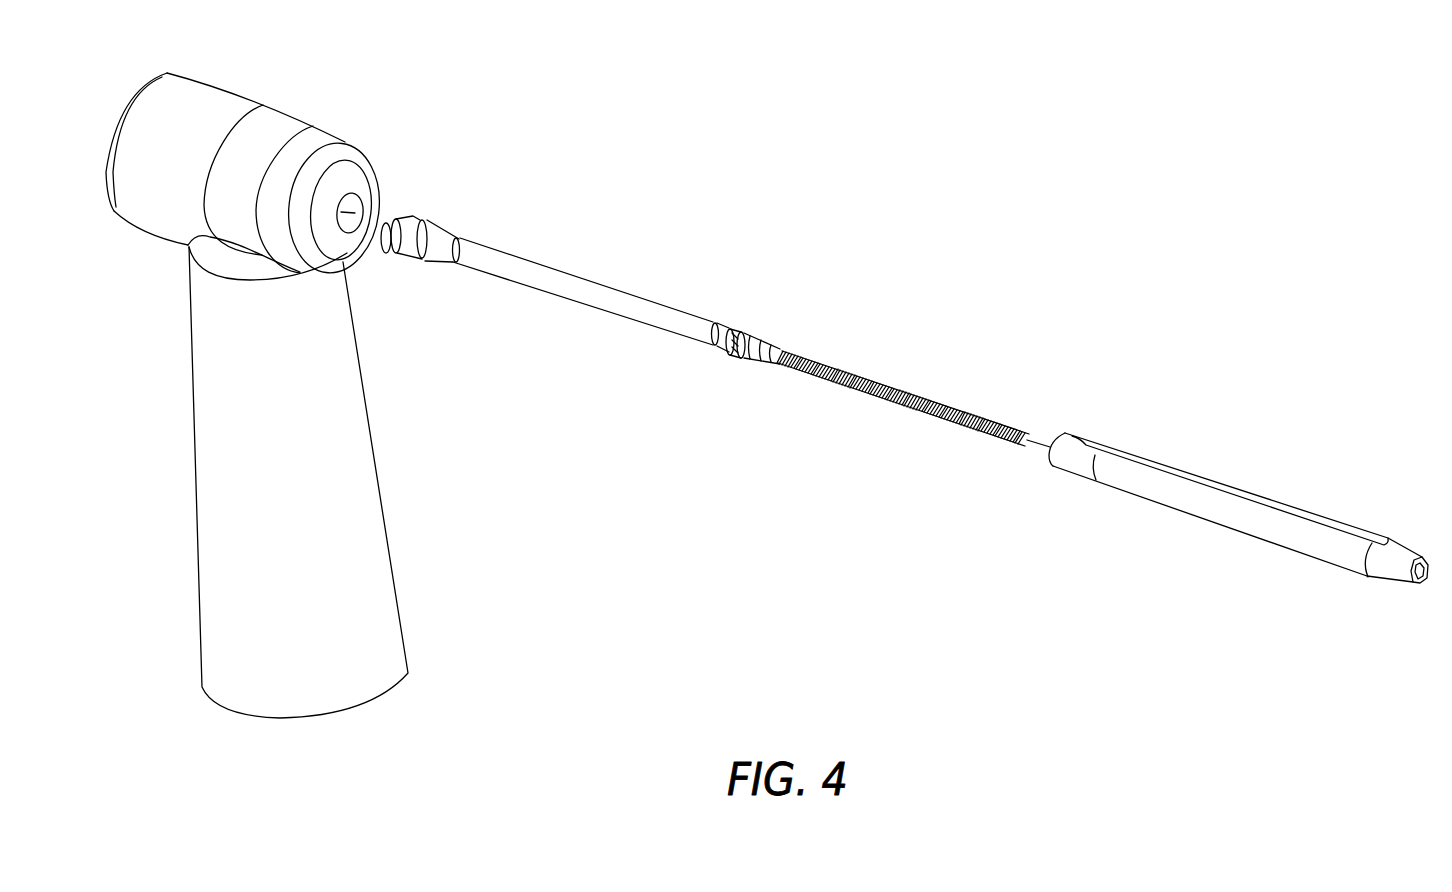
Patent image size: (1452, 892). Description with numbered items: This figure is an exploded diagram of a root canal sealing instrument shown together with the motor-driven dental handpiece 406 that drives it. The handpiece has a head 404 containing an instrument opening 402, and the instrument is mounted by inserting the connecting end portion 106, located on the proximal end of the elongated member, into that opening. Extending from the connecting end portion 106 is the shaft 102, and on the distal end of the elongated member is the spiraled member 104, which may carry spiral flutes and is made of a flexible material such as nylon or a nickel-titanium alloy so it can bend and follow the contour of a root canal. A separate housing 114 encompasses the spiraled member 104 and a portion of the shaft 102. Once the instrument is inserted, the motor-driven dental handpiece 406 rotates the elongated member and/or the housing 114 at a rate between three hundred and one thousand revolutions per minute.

The head 404 is at (218, 90).
The instrument opening 402 is at (348, 204).
The motor-driven dental handpiece 406 is at (360, 340).
The connecting end portion 106 is at (403, 253).
The shaft 102 is at (602, 285).
The spiraled member 104 is at (882, 385).
The housing 114 is at (1153, 505).